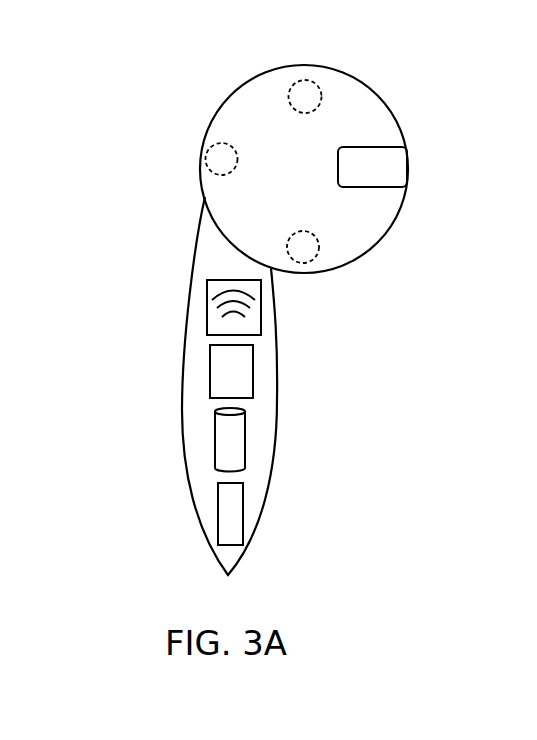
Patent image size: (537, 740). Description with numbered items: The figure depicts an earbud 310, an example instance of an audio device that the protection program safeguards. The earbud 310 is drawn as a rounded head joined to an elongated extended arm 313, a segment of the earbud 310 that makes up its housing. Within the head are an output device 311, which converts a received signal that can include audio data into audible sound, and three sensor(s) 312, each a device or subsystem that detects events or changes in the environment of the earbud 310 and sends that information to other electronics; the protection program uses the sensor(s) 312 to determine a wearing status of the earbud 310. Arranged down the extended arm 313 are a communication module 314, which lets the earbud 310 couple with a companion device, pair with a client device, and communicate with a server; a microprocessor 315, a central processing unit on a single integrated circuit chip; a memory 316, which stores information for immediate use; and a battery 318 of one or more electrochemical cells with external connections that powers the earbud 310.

The earbud 310 is at (412, 50).
The output device 311 is at (385, 147).
The sensor(s) 312 is at (292, 107).
The extended arm 313 is at (194, 243).
The communication module 314 is at (261, 313).
The microprocessor 315 is at (253, 368).
The memory 316 is at (245, 438).
The battery 318 is at (243, 515).